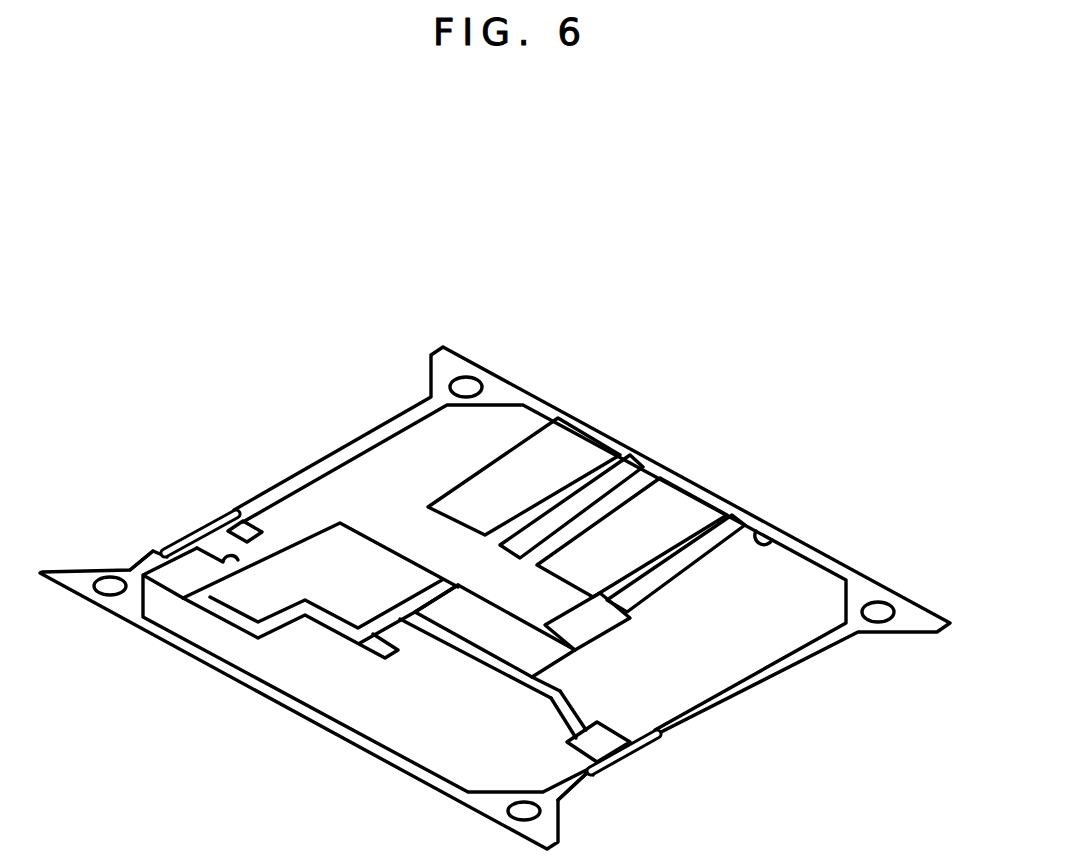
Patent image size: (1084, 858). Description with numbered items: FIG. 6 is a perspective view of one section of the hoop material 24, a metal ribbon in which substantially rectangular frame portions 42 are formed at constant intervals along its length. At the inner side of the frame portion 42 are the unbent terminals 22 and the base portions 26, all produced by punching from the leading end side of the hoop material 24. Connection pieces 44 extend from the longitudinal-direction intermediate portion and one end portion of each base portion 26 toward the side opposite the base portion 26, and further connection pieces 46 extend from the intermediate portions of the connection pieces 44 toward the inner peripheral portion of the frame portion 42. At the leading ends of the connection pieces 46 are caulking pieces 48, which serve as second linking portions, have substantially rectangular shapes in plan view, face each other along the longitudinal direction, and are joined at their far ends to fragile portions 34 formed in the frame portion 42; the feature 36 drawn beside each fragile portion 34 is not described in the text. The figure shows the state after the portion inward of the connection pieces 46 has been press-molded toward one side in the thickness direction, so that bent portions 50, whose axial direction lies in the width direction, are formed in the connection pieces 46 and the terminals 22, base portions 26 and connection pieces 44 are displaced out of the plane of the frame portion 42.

The unbent terminals 22 is at (650, 566).
The hoop material 24 is at (718, 472).
The base portions 26 is at (600, 628).
The fragile portions 34 is at (173, 545).
The slot 36 is at (214, 524).
The frame portions 42 is at (778, 536).
The connection pieces 44 is at (307, 538).
The connection pieces 46 is at (225, 562).
The caulking pieces 48 is at (246, 542).
The bent portions 50 is at (548, 695).